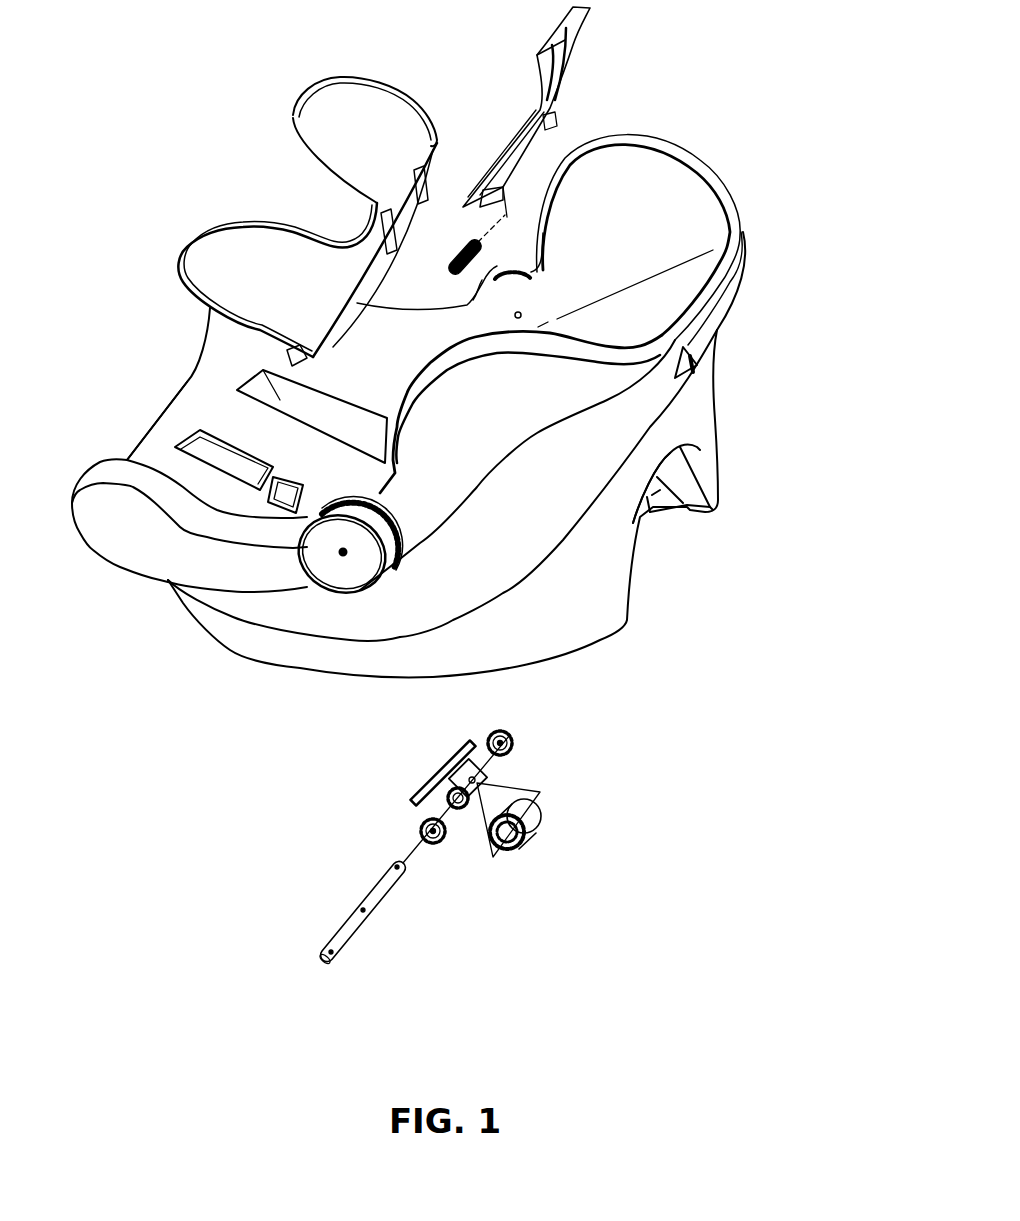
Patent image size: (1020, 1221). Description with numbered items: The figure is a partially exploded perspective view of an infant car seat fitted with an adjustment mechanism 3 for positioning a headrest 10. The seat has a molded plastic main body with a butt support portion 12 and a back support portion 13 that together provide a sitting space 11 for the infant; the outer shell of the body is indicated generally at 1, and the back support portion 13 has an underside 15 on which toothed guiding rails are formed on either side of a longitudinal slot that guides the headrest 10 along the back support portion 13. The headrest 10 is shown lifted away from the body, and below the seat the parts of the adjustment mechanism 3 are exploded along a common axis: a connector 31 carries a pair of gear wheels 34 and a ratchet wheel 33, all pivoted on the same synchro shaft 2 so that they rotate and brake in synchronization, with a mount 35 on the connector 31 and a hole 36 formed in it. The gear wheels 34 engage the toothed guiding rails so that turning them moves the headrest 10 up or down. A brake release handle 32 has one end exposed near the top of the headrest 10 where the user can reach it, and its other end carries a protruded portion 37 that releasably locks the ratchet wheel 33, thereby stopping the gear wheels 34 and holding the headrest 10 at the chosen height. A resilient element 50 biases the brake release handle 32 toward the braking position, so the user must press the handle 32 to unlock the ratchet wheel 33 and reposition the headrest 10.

The base 1 is at (447, 427).
The synchro shaft 2 is at (383, 893).
The adjustment mechanism 3 is at (483, 763).
The headrest 10 is at (339, 137).
The sitting space 11 is at (638, 195).
The butt support portion 12 is at (200, 407).
The back support portion 13 is at (678, 286).
The underside 15 is at (643, 410).
The connector 31 is at (430, 761).
The brake release handle 32 is at (580, 56).
The ratchet wheel 33 is at (536, 824).
The gear wheels 34 is at (509, 741).
The mount 35 is at (447, 765).
The hole 36 is at (480, 780).
The protruded portion 37 is at (500, 190).
The resilient element 50 is at (453, 270).